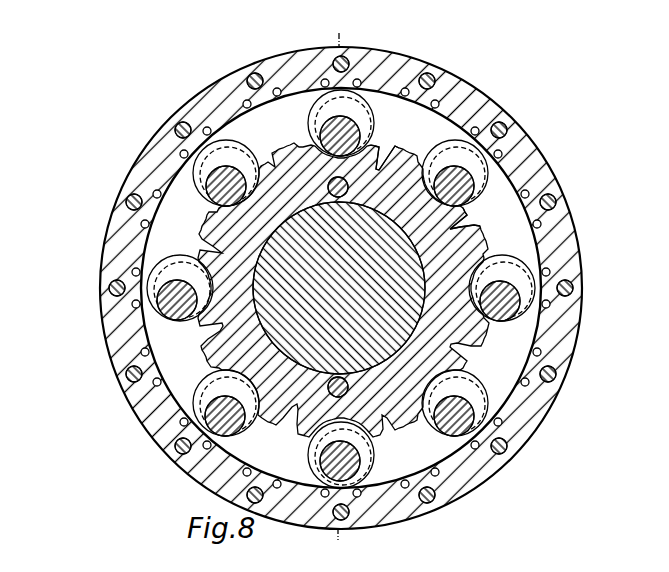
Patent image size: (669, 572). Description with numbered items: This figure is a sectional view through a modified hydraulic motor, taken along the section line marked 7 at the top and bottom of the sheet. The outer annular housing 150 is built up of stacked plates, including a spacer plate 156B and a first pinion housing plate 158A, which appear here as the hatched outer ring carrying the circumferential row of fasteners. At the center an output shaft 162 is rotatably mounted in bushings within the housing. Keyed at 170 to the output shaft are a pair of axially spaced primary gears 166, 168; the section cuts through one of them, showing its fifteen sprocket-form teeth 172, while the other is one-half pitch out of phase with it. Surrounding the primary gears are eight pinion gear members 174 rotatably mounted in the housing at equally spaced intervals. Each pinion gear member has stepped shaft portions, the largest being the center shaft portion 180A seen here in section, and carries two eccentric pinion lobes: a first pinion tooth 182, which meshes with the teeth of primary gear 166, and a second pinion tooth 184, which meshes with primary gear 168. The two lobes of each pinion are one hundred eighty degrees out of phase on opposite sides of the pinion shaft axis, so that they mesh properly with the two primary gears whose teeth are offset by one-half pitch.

The section line 7- 7 is at (309, 288).
The housing 150 is at (94, 282).
The spacer plate 156B is at (517, 333).
The first pinion housing plate 158A is at (473, 96).
The output shaft 162 is at (343, 274).
The primary gear 166 is at (486, 179).
The primary gear 168 is at (486, 230).
The key 170 is at (384, 153).
The teeth 172 is at (286, 136).
The pinion gear member 174 is at (193, 196).
The center shaft portion 180A is at (362, 122).
The first pinion tooth 182 is at (316, 98).
The second pinion tooth 184 is at (363, 96).